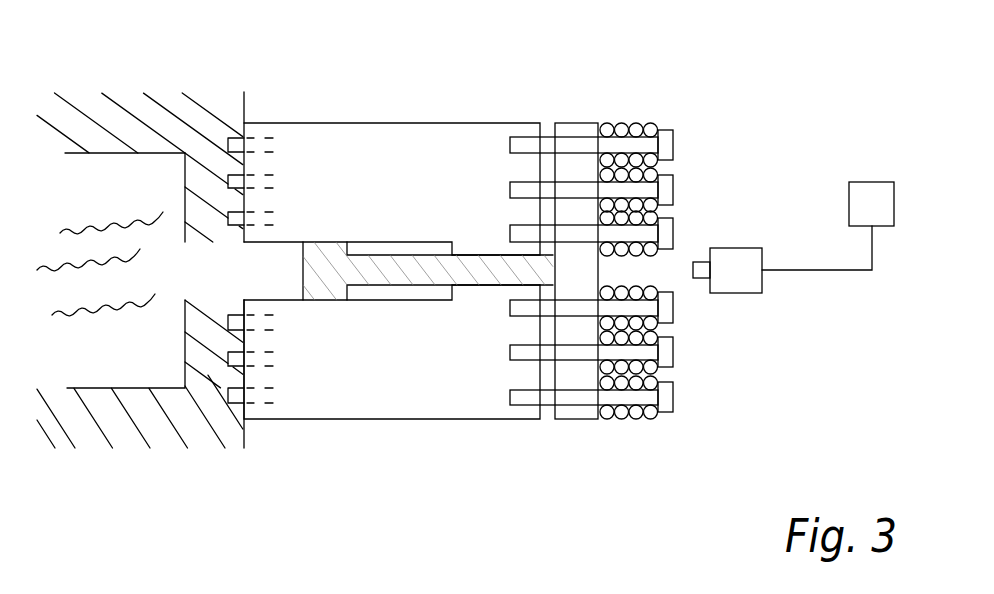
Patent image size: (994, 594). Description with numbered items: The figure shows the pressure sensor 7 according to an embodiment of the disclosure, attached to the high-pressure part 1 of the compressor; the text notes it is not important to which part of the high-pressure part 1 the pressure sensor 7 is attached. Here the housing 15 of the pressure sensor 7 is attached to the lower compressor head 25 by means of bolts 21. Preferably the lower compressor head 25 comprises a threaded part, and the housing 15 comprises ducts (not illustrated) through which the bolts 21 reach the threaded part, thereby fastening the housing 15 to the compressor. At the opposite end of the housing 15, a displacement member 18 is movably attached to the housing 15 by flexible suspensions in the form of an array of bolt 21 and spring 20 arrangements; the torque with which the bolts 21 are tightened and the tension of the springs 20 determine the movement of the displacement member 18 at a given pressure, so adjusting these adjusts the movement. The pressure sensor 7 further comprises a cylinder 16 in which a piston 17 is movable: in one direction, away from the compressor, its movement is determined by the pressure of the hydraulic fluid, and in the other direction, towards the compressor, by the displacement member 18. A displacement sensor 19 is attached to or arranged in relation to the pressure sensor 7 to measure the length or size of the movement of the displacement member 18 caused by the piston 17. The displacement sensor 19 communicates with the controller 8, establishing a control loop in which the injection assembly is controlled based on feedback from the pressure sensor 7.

The high-pressure part 1 is at (110, 190).
The lower compressor head 25 is at (168, 100).
The bolts 21 is at (258, 145).
The housing 15 is at (450, 128).
The cylinder 16 is at (288, 268).
The piston 17 is at (333, 270).
The displacement member 18 is at (571, 123).
The springs 20 is at (646, 128).
The displacement sensor 19 is at (740, 293).
The controller 8 is at (873, 182).
The pressure sensor 7 is at (735, 458).